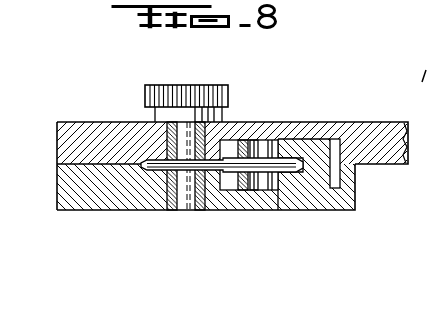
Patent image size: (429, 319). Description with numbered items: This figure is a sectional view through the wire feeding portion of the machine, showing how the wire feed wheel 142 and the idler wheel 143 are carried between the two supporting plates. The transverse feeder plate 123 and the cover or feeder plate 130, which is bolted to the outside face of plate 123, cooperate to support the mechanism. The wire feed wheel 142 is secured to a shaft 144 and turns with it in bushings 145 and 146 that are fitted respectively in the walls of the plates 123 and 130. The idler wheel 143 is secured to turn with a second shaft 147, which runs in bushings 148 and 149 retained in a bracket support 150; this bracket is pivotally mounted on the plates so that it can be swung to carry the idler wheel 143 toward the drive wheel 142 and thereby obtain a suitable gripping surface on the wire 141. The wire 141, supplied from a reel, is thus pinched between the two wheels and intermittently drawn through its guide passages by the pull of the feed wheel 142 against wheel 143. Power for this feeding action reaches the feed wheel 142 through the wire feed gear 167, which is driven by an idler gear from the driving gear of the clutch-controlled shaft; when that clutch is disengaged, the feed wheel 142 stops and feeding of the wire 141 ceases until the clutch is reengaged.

The feeder plate 123 is at (393, 133).
The cover or feeder plate 130 is at (223, 188).
The wire 141 is at (228, 157).
The wire feed wheel 142 is at (160, 171).
The idler wheel 143 is at (293, 178).
The shaft 144 is at (188, 182).
The bushing 145 is at (167, 133).
The bushing 146 is at (208, 185).
The shaft 147 is at (272, 191).
The bushing 148 is at (273, 150).
The bushing 149 is at (285, 190).
The bracket support 150 is at (350, 170).
The wire feed gear 167 is at (222, 103).